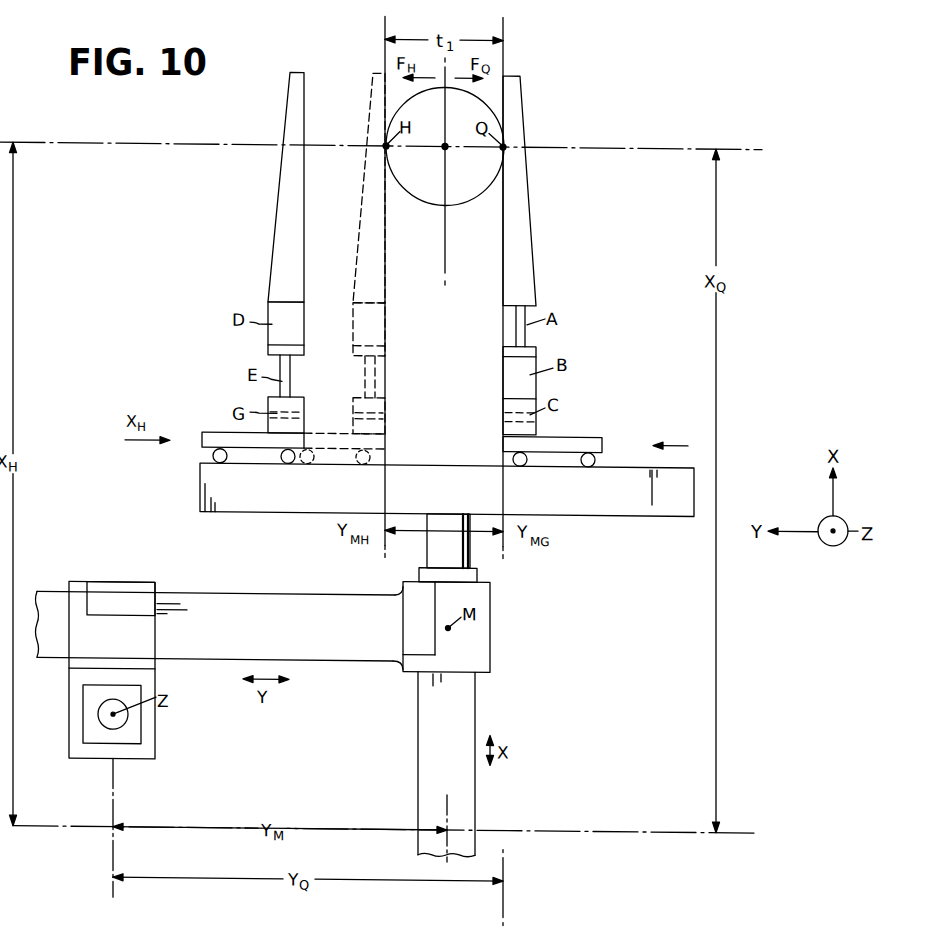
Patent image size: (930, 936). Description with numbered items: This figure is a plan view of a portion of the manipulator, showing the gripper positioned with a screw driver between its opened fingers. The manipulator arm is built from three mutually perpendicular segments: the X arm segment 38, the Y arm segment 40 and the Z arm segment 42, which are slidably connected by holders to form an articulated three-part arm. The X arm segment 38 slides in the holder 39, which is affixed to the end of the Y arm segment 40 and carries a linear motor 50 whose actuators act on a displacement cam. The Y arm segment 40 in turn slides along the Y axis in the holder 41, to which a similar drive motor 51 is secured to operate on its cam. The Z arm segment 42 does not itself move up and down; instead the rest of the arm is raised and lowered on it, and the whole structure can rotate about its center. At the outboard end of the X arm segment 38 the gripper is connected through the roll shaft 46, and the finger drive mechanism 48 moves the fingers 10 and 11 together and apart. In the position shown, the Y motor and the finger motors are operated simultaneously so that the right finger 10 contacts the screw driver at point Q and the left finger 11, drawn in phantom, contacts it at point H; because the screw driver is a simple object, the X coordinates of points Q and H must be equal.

The finger 10 is at (527, 221).
The finger 11 is at (284, 209).
The X arm segment 38 is at (417, 717).
The holder 39 is at (480, 648).
The Y arm segment 40 is at (242, 601).
The holder 41 is at (87, 659).
The Z arm segment 42 is at (135, 737).
The roll shaft 46 is at (458, 553).
The finger drive mechanism 48 is at (200, 506).
The linear motor 50 is at (417, 596).
The drive motor 51 is at (108, 592).